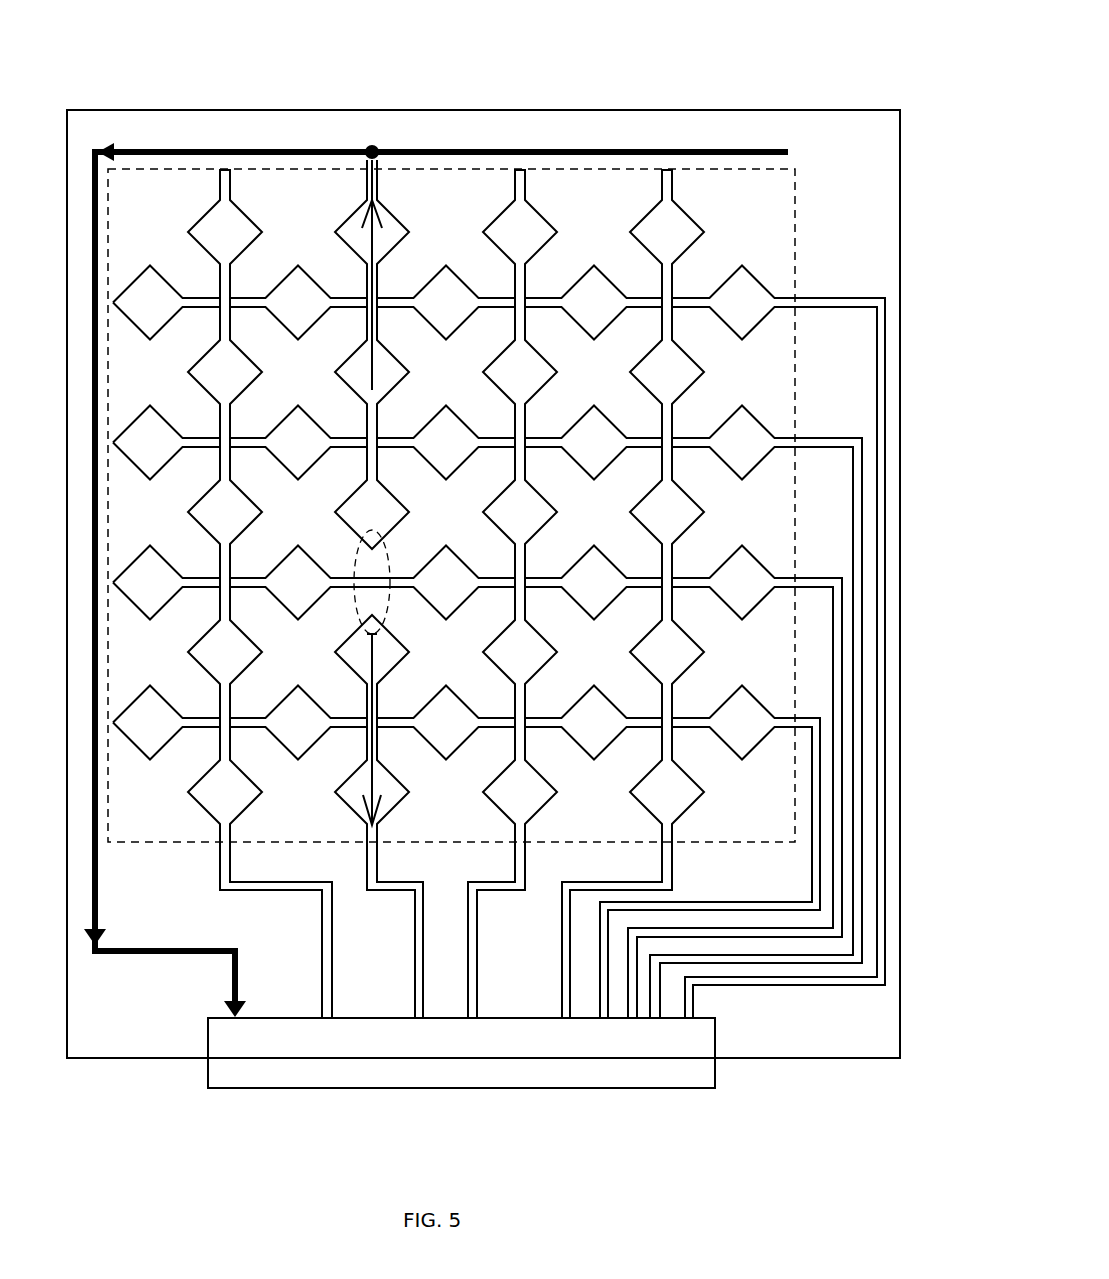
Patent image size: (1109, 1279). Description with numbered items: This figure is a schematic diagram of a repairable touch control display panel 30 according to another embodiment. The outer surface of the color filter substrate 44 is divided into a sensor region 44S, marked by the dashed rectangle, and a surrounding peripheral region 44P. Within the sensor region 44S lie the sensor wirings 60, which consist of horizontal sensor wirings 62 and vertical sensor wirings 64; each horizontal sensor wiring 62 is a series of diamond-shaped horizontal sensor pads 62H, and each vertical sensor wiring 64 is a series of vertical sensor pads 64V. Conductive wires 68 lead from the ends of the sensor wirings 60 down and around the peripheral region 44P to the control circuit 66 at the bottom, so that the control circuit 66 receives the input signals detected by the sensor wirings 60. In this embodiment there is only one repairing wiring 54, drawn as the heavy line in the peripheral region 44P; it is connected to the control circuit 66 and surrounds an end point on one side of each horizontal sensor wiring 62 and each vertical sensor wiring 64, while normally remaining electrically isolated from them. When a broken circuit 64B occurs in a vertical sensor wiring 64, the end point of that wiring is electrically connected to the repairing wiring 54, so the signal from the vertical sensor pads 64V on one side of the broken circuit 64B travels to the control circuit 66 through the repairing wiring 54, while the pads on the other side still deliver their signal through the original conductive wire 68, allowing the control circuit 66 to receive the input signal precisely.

The repairable touch control display panel 30 is at (760, 50).
The color filter substrate 44 is at (810, 110).
The sensor region 44S is at (797, 372).
The peripheral region 44P is at (812, 1027).
The repairing wiring 54 is at (112, 953).
The sensor wirings 60 is at (523, 589).
The horizontal sensor wiring 62 is at (788, 302).
The horizontal sensor pad 62H is at (765, 315).
The vertical sensor wiring 64 is at (667, 187).
The vertical sensor pad 64V is at (690, 244).
The broken circuit 64B is at (388, 557).
The control circuit 66 is at (455, 1064).
The conductive wires 68 is at (477, 993).